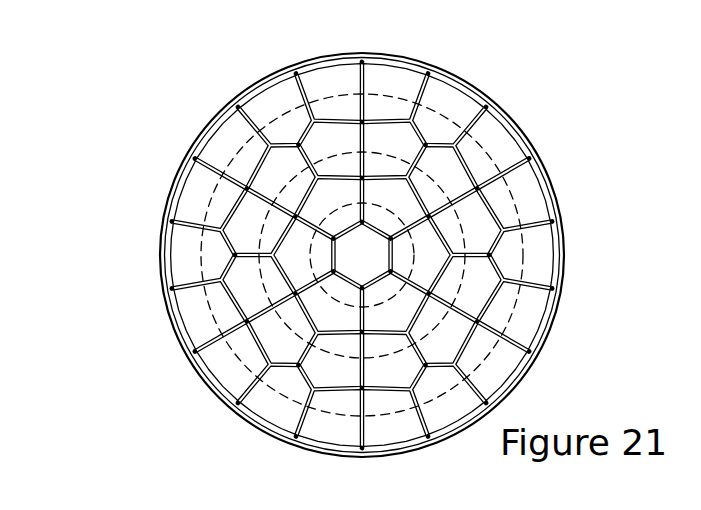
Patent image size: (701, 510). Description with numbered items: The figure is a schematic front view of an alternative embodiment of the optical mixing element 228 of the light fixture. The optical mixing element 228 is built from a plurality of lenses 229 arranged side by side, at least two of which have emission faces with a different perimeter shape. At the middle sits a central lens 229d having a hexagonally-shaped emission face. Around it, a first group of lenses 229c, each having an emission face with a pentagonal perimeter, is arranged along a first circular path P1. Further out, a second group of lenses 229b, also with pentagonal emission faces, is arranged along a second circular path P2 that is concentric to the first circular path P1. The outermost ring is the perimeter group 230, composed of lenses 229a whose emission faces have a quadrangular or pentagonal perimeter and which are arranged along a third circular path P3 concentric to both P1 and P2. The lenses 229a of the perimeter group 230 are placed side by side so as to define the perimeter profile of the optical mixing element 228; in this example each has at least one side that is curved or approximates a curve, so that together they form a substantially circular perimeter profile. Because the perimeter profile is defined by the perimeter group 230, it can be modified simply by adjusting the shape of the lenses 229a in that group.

The optical mixing element 228 is at (560, 160).
The lenses 229 is at (489, 102).
The lenses of the perimeter group 229a is at (387, 88).
The second group of lenses 229b is at (227, 282).
The first group of lenses 229c is at (393, 307).
The central lens 229d is at (307, 300).
The perimeter group 230 is at (236, 102).
The first circular path P1 is at (562, 260).
The second circular path P2 is at (562, 202).
The third circular path P3 is at (517, 120).